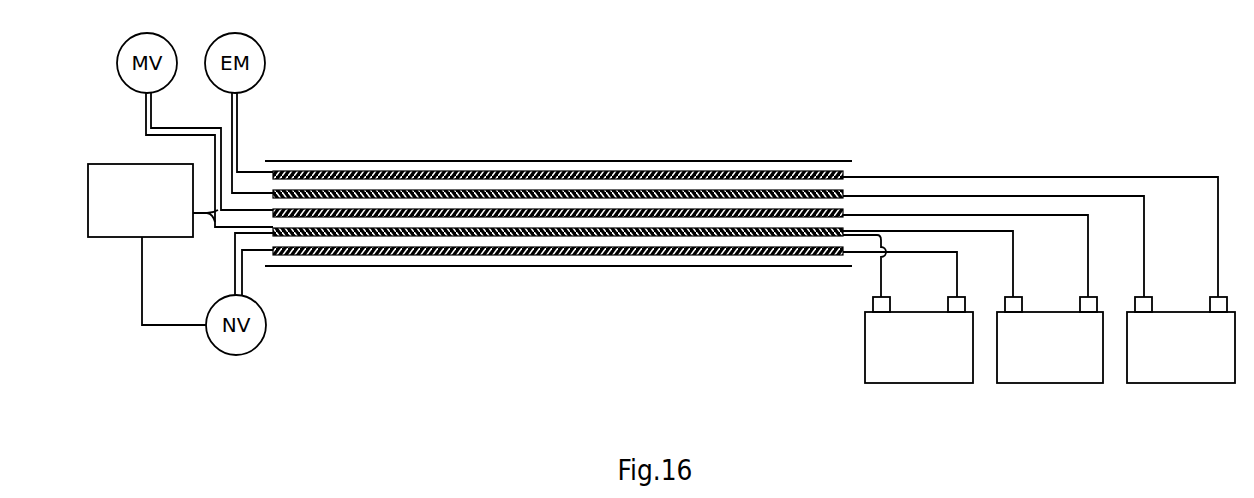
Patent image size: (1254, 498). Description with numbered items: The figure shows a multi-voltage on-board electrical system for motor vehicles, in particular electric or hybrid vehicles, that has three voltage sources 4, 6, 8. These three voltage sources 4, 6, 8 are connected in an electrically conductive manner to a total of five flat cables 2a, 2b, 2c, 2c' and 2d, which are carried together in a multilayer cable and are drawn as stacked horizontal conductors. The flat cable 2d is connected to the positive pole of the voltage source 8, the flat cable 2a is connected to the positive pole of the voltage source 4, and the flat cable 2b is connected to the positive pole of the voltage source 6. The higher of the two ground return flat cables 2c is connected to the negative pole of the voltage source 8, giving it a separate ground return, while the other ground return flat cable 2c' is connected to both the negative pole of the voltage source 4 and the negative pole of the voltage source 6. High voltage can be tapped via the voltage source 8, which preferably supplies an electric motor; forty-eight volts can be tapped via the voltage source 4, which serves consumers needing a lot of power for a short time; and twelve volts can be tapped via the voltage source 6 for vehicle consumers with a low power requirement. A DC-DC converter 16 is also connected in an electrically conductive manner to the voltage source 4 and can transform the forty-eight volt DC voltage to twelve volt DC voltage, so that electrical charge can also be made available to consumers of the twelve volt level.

The DC-DC converter 16 is at (108, 238).
The flat cable 2a is at (767, 212).
The flat cable 2b is at (670, 253).
The ground return flat cable 2c is at (558, 149).
The ground return flat cable 2c' is at (558, 277).
The flat cable 2d is at (630, 172).
The voltage source 4 is at (1023, 385).
The voltage source 6 is at (892, 385).
The voltage source 8 is at (1153, 385).